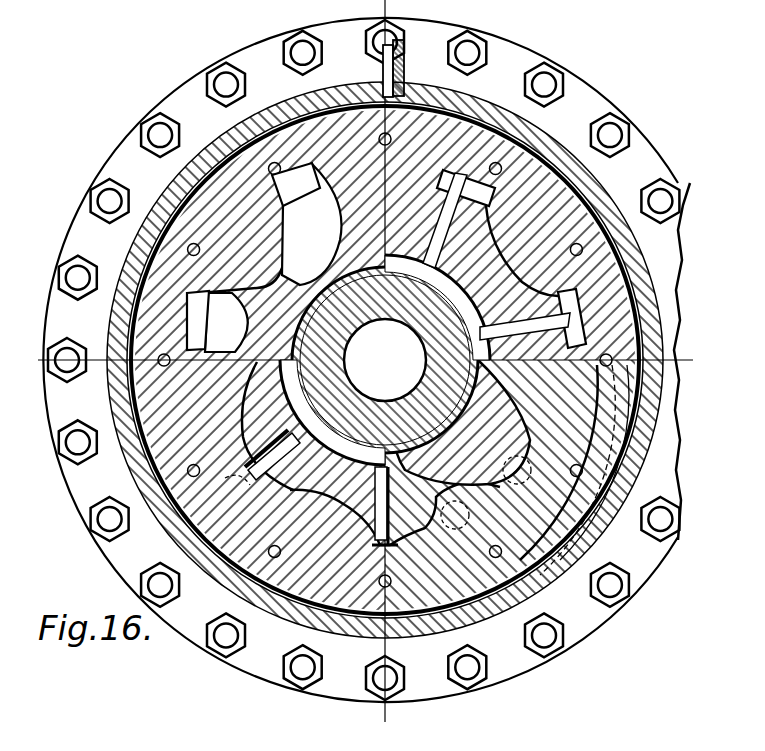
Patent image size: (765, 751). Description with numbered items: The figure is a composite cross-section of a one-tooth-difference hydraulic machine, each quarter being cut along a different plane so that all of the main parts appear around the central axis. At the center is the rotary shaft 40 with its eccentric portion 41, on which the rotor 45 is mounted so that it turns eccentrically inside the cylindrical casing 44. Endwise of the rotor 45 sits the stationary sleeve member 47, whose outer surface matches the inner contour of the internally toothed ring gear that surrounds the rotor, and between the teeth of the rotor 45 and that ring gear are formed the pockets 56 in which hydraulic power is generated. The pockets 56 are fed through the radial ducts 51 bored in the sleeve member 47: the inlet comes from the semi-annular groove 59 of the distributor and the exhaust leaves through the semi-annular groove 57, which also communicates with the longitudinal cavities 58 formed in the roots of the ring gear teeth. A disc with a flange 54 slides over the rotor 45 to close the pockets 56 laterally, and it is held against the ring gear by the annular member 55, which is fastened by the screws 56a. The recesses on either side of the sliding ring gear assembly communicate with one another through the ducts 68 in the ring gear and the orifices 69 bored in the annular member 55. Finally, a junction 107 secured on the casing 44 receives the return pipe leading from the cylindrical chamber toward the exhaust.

The rotary shaft 40 is at (485, 330).
The eccentric portion 41 is at (358, 340).
The casing 44 is at (167, 223).
The rotor 45 is at (292, 300).
The sleeve member 47 is at (490, 255).
The ducts 51 is at (448, 200).
The flange 54 is at (604, 352).
The annular member 55 is at (605, 455).
The pockets 56 is at (335, 200).
The screws 56a is at (540, 515).
The semi-annular groove 57 is at (340, 440).
The longitudinal cavities 58 is at (320, 172).
The semi-annular groove 59 is at (448, 298).
The ducts 68 is at (280, 165).
The orifices 69 is at (618, 415).
The junction 107 is at (400, 50).